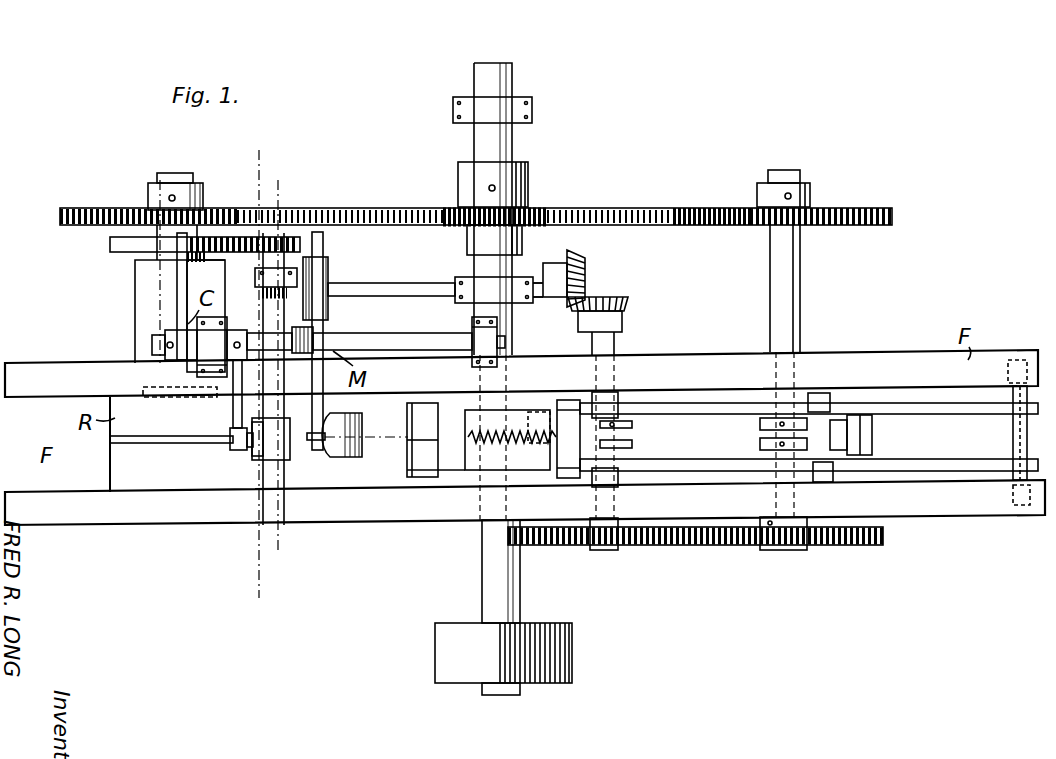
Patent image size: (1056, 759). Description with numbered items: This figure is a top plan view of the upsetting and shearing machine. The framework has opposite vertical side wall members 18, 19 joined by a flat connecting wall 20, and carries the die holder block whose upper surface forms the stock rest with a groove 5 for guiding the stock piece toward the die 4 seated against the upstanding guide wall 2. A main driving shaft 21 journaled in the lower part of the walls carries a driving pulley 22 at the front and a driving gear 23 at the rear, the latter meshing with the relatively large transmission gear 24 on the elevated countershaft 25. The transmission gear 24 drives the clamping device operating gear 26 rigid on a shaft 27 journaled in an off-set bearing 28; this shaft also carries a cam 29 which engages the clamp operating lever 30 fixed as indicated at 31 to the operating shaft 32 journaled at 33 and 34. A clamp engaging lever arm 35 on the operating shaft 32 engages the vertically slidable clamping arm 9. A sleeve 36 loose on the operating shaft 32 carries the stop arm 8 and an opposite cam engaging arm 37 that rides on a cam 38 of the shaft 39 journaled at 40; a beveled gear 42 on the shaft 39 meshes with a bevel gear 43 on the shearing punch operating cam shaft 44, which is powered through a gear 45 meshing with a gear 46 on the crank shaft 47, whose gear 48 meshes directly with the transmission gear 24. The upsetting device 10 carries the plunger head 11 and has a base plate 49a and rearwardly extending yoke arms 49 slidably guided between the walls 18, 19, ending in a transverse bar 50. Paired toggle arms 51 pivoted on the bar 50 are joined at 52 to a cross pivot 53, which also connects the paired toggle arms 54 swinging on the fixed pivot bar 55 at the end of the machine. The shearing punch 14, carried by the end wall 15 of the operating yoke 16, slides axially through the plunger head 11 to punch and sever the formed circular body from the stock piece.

The upstanding guide wall 2 is at (290, 456).
The die 4 is at (276, 180).
The groove 5 is at (262, 157).
The stop arm 8 is at (312, 382).
The clamping arm 9 is at (240, 450).
The upsetting device 10 is at (365, 432).
The plunger head 11 is at (343, 426).
The shearing punch 14 is at (422, 437).
The end wall 15 is at (468, 437).
The operating yoke 16 is at (490, 406).
The vertical side wall member 18 is at (521, 373).
The vertical side wall member 19 is at (525, 502).
The flat connecting wall 20 is at (86, 490).
The main driving shaft 21 is at (482, 568).
The driving pulley 22 is at (503, 659).
The driving gear 23 is at (550, 203).
The transmission gear 24 is at (398, 216).
The countershaft 25 is at (497, 146).
The clamping device operating gear 26 is at (126, 213).
The shaft 27 is at (175, 173).
The off-set bearing 28 is at (150, 303).
The cam 29 is at (110, 246).
The clamp operating lever 30 is at (183, 277).
The connection 31 is at (160, 345).
The operating shaft 32 is at (152, 348).
The journal 33 is at (214, 346).
The journal 34 is at (480, 338).
The clamp engaging lever arm 35 is at (233, 408).
The sleeve 36 is at (318, 338).
The cam engaging arm 37 is at (326, 240).
The cam 38 is at (328, 285).
The shaft 39 is at (431, 282).
The journal 40 is at (260, 278).
The beveled gear 42 is at (584, 263).
The bevel gear 43 is at (625, 300).
The shearing punch operating cam shaft 44 is at (607, 342).
The gear 45 is at (638, 544).
The gear 46 is at (745, 544).
The crank shaft 47 is at (790, 318).
The gear 48 is at (880, 226).
The yoke arms 49 is at (548, 494).
The base plate 49a is at (418, 472).
The transverse bar 50 is at (615, 440).
The toggle arms 51 is at (699, 414).
The joint 52 is at (822, 398).
The cross pivot 53 is at (820, 482).
The toggle arms 54 is at (910, 403).
The fixed pivot bar 55 is at (1013, 436).